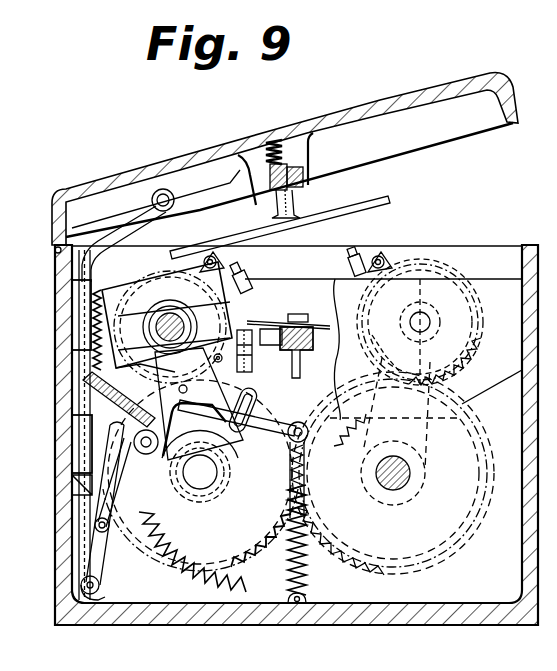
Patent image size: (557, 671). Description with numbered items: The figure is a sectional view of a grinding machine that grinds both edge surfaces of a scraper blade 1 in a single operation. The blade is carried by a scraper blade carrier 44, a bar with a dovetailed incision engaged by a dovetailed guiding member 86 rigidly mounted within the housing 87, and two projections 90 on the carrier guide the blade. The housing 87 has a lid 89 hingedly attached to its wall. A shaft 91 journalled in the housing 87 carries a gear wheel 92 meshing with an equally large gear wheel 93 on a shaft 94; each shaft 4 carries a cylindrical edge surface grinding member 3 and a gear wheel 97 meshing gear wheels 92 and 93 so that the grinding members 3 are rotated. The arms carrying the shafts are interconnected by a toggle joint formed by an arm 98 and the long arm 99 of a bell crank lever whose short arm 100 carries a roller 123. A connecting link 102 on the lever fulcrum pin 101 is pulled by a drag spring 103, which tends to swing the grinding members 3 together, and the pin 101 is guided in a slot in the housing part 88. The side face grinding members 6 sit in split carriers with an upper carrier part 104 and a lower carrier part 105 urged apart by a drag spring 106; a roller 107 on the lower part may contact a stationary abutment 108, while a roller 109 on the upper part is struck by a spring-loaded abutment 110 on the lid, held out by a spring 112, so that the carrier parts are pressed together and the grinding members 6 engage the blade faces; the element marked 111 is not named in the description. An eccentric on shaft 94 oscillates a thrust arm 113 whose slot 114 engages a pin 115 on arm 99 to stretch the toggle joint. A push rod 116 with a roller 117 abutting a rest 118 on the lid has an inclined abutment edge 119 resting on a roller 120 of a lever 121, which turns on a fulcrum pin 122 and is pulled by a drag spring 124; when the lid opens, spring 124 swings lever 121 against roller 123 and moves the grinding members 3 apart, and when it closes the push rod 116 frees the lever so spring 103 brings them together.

The scraper blade 1 is at (270, 320).
The cylindrical edge surface grinding member 3 is at (207, 315).
The shaft 4 is at (433, 325).
The side face grinding member 6 is at (245, 283).
The scraper blade carrier 44 is at (283, 330).
The guiding member 86 is at (298, 360).
The housing 87 is at (63, 453).
The housing part 88 is at (77, 400).
The lid 89 is at (296, 128).
The projection 90 is at (296, 320).
The shaft 91 is at (397, 490).
The gear wheel 92 is at (430, 563).
The gear wheel 93 is at (170, 565).
The shaft 94 is at (203, 492).
The gear wheel 97 is at (465, 350).
The arm 98 is at (345, 432).
The long arm of bell crank lever 99 is at (172, 416).
The short arm of bell crank lever 100 is at (158, 454).
The lever fulcrum pin 101 is at (300, 440).
The connecting link 102 is at (284, 450).
The drag spring 103 is at (305, 563).
The upper carrier part 104 is at (110, 293).
The lower carrier part 105 is at (143, 370).
The drag spring 106 is at (95, 318).
The roller 107 is at (213, 358).
The stationary abutment 108 is at (270, 380).
The roller 109 is at (207, 257).
The abutment 110 is at (377, 203).
The cavity 111 is at (312, 150).
The spring 112 is at (250, 143).
The thrust arm 113 is at (240, 446).
The slot 114 is at (187, 390).
The pin 115 is at (250, 408).
The push rod 116 is at (58, 262).
The roller 117 is at (178, 198).
The rest 118 is at (118, 192).
The inclined abutment edge 119 is at (88, 500).
The roller 120 is at (96, 522).
The lever 121 is at (80, 583).
The fulcrum pin 122 is at (63, 607).
The roller 123 is at (133, 418).
The drag spring 124 is at (153, 558).